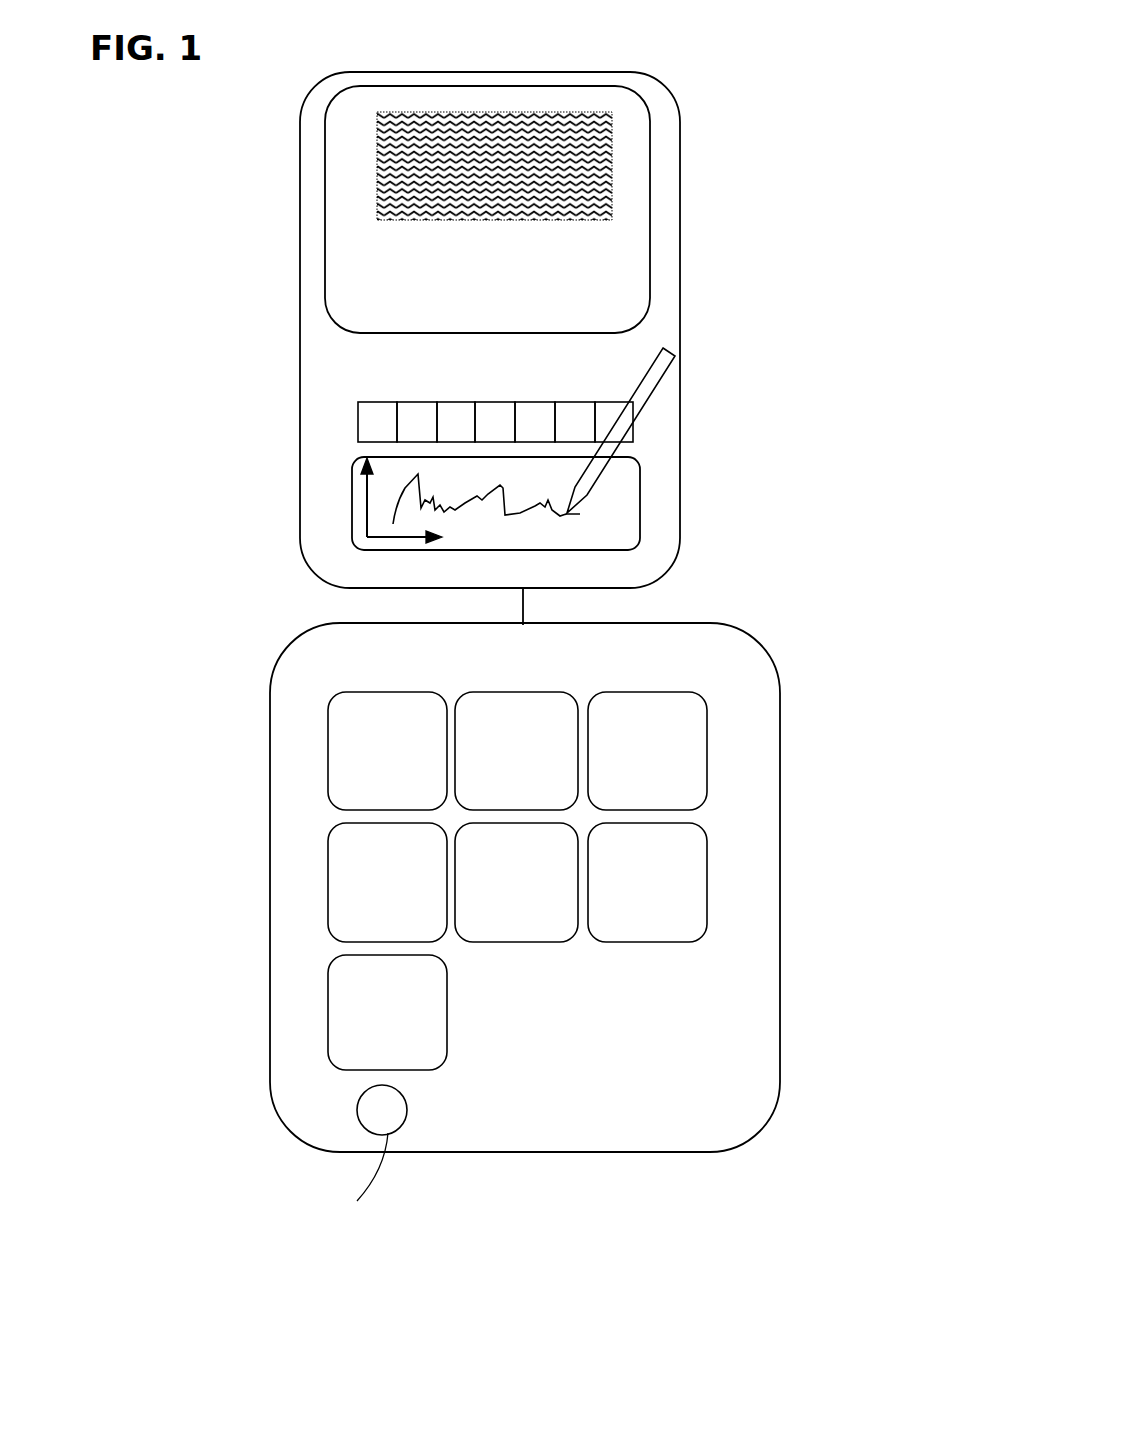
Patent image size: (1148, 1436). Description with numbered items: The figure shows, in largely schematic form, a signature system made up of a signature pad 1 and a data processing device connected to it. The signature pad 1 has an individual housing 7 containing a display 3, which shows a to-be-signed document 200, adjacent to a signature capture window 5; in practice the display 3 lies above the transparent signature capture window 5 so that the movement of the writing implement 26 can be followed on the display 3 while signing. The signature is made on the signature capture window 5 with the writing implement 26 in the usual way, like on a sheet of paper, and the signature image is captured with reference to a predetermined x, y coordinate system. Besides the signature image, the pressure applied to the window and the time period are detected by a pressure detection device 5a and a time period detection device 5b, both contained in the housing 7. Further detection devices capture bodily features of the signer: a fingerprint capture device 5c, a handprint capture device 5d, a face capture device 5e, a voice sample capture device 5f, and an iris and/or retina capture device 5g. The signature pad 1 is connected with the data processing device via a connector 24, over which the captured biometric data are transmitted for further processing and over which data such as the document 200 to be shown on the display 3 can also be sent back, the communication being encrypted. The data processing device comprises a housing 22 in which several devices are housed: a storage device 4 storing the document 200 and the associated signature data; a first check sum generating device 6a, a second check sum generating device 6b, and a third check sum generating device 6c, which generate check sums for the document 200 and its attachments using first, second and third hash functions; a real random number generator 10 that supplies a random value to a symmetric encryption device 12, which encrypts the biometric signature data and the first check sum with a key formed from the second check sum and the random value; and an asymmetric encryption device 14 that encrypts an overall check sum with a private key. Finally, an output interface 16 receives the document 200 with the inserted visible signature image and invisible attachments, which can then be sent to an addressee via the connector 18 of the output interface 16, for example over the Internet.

The signature pad 1 is at (282, 360).
The display 3 is at (338, 191).
The storage device 4 is at (362, 733).
The signature capture window 5 is at (585, 495).
The pressure detection device 5a is at (372, 415).
The time period detection device 5b is at (410, 418).
The fingerprint capture device 5c is at (452, 412).
The handprint capture device 5d is at (488, 415).
The face capture device 5e is at (528, 413).
The voice sample capture device 5f is at (579, 418).
The iris and/or retina capture device 5g is at (618, 402).
The first check sum generating device 6a is at (530, 740).
The second check sum generating device 6b is at (680, 726).
The third check sum generating device 6c is at (375, 850).
The housing 7 is at (676, 285).
The real random number generator 10 is at (548, 890).
The symmetric encryption device 12 is at (680, 893).
The asymmetric encryption device 14 is at (350, 995).
The output interface 16 is at (393, 1110).
The connector 18 is at (187, 1152).
The housing 22 is at (780, 1040).
The connector 24 is at (522, 603).
The writing implement 26 is at (648, 393).
The to-be-signed document 200 is at (512, 128).